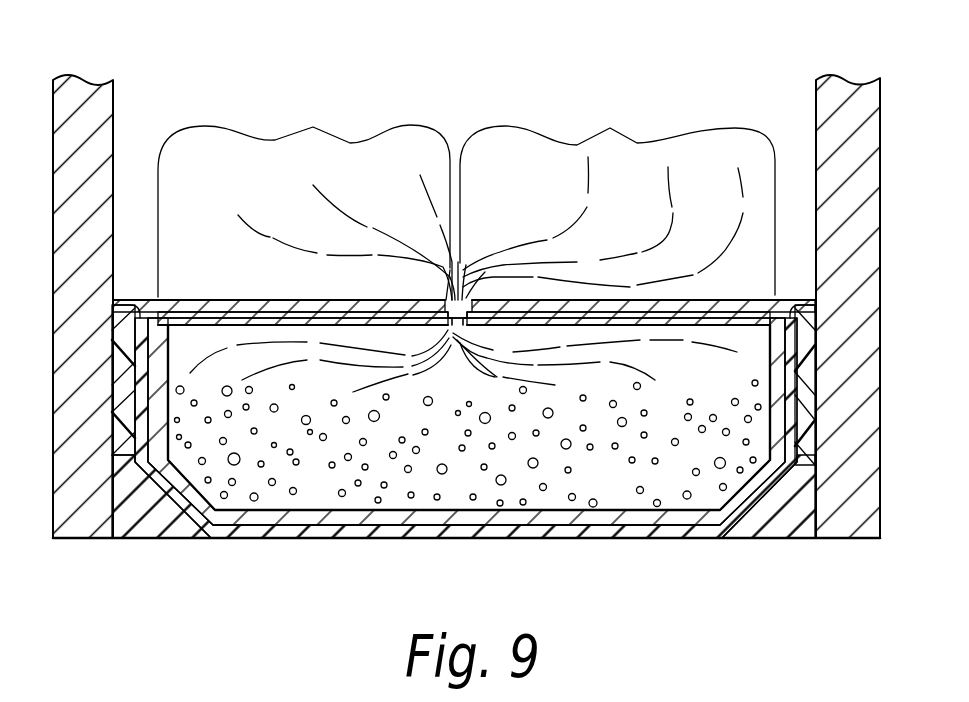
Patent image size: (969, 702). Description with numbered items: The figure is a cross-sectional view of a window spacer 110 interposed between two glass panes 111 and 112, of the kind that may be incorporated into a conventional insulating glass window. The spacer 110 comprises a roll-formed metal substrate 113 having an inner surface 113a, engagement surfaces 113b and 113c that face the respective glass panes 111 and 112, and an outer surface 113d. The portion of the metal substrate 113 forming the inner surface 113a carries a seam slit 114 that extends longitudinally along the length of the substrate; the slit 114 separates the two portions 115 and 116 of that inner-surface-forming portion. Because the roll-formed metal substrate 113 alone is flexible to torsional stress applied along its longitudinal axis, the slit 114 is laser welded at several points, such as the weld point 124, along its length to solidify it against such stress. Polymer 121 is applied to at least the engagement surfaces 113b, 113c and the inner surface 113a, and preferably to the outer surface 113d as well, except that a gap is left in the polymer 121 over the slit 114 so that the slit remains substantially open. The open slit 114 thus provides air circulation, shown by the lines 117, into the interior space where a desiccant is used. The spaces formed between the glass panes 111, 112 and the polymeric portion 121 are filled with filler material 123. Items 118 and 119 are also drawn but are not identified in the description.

The window spacer 110 is at (470, 105).
The glass pane 111 is at (113, 108).
The glass pane 112 is at (814, 112).
The roll-formed metal substrate 113 is at (462, 433).
The inner surface 113a is at (180, 310).
The engagement surface 113b is at (130, 465).
The engagement surface 113c is at (800, 462).
The outer surface 113d is at (543, 540).
The seam slit 114 is at (447, 293).
The portion of inner surface 115 is at (306, 194).
The portion of inner surface 116 is at (617, 191).
The air circulation lines 117 is at (655, 240).
The bubbles / particles 118 is at (311, 478).
The flow lines within cavity 119 is at (676, 478).
The polymer 121 is at (105, 453).
The filler material 123 is at (175, 520).
The laser weld point 124 is at (463, 297).